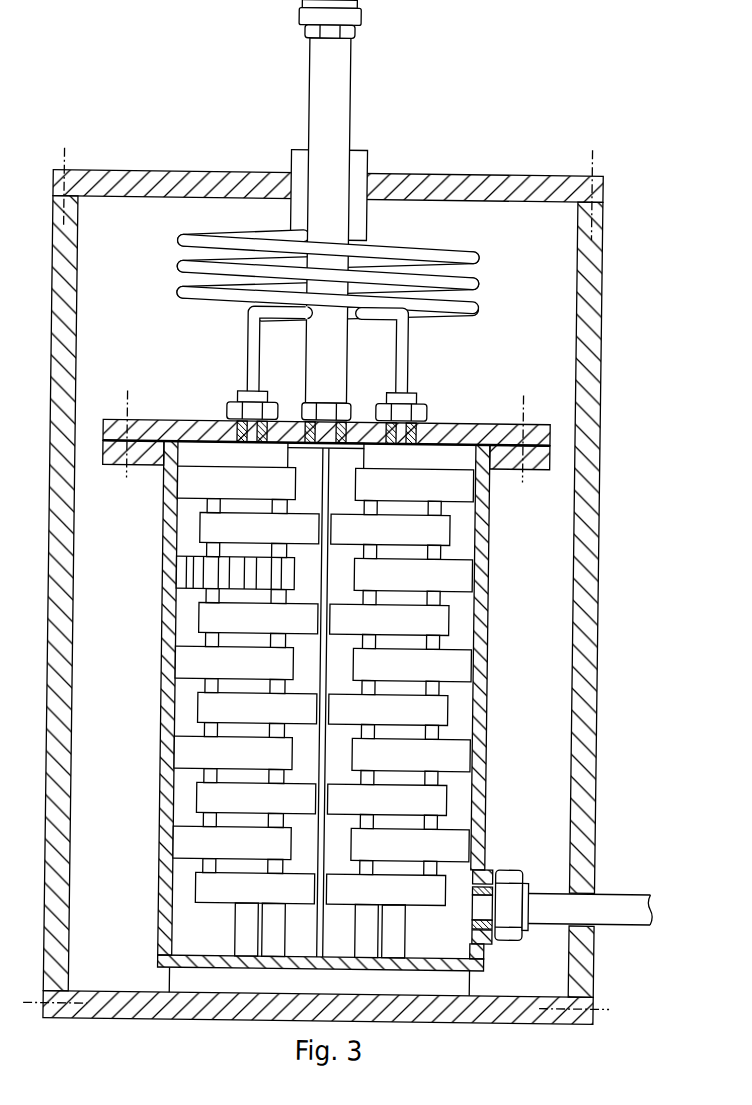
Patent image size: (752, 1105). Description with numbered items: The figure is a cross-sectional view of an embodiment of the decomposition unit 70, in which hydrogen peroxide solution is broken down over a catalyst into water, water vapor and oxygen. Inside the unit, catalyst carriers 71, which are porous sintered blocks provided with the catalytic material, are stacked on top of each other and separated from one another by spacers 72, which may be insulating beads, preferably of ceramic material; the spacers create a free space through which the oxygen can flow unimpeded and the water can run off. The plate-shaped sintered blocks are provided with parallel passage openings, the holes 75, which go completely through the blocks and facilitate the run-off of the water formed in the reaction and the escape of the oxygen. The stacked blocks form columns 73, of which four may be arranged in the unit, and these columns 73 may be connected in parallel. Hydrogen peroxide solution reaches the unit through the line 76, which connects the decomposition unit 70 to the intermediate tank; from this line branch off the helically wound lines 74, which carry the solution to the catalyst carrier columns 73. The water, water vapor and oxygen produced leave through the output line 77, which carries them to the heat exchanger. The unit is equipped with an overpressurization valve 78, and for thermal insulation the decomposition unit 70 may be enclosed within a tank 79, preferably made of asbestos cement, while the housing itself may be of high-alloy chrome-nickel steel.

The decomposition unit 70 is at (491, 526).
The catalyst carriers 71 is at (444, 622).
The spacers 72 is at (435, 727).
The columns of sintered blocks 73 is at (452, 770).
The helically wound lines 74 is at (247, 340).
The holes 75 is at (179, 577).
The line 76 is at (363, 163).
The output line 77 is at (630, 921).
The overpressurization valve 78 is at (356, 21).
The tank 79 is at (597, 787).